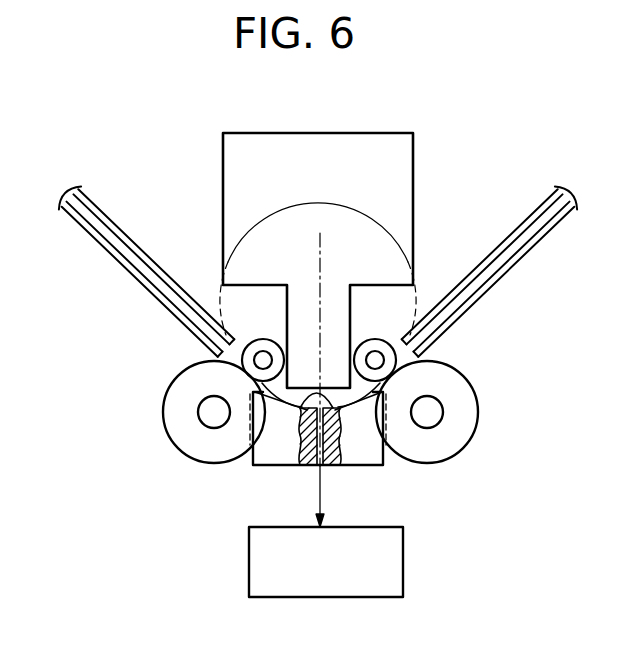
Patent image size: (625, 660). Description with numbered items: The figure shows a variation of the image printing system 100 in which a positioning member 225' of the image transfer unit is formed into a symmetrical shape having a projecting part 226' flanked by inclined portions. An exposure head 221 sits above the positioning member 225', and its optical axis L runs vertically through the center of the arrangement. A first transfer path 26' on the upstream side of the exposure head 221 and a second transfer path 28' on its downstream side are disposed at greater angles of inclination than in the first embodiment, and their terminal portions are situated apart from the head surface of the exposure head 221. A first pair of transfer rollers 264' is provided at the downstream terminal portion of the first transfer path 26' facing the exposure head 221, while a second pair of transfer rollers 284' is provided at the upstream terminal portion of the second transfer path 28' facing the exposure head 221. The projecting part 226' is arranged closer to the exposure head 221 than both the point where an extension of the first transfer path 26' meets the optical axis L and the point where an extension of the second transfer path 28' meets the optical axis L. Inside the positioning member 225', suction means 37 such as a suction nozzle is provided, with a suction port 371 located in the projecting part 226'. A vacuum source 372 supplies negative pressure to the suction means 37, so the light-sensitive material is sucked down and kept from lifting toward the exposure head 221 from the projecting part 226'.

The image printing system 100 is at (340, 104).
The optical axis L is at (321, 253).
The exposure head 221 is at (400, 172).
The second transfer path 28' is at (146, 267).
The first transfer path 26' is at (509, 272).
The projecting part 226' is at (324, 347).
The second pair of transfer rollers 284' is at (191, 440).
The first pair of transfer rollers 264' is at (476, 412).
The positioning member 225' is at (368, 456).
The suction port 371 is at (304, 401).
The suction means 37 is at (321, 466).
The vacuum source 372 is at (405, 576).